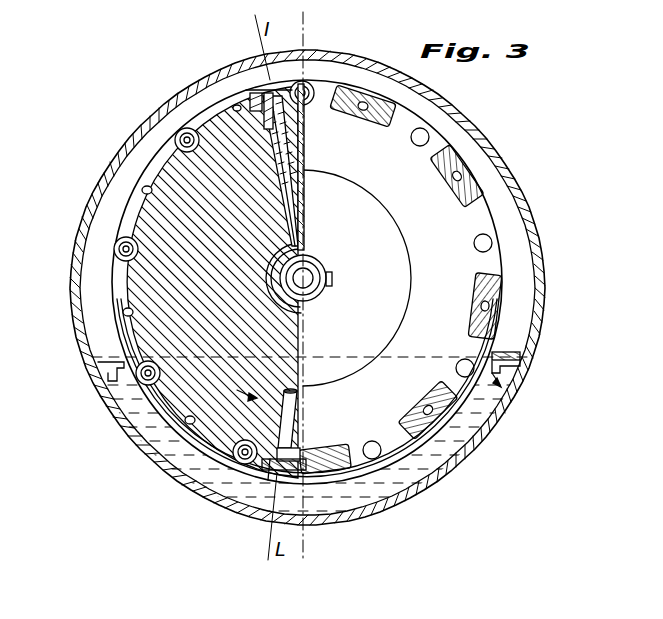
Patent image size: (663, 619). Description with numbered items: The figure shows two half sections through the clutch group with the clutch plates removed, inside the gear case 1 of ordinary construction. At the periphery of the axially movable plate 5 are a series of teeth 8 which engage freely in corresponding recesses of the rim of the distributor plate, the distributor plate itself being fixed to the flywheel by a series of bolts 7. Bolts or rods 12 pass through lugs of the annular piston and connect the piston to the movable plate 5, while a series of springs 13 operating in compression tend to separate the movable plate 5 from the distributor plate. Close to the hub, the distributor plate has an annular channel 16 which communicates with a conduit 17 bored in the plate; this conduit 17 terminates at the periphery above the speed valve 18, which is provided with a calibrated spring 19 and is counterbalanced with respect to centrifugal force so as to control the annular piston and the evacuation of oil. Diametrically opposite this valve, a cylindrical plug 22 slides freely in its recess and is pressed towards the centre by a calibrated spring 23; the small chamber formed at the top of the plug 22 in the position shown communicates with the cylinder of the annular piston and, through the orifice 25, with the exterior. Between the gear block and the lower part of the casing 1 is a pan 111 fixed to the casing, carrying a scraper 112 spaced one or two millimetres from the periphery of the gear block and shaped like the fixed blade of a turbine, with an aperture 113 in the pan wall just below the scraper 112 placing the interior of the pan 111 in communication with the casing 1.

The gear case 1 is at (503, 163).
The movable plate 5 is at (412, 224).
The bolts 7 is at (142, 190).
The teeth 8 is at (488, 258).
The bolts or rods 12 is at (176, 138).
The springs 13 is at (115, 250).
The annular channel 16 is at (283, 310).
The conduit 17 is at (303, 154).
The speed valve 18 is at (247, 90).
The calibrated spring 19 is at (287, 143).
The cylindrical plug 22 is at (288, 412).
The calibrated spring 23 is at (297, 449).
The orifice 25 is at (279, 467).
The pan 111 is at (110, 385).
The scraper 112 is at (504, 348).
The aperture 113 is at (505, 373).